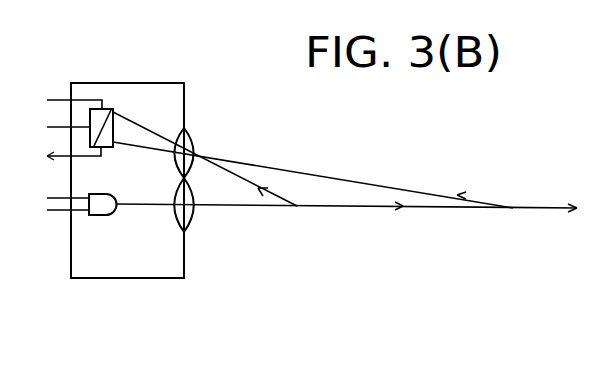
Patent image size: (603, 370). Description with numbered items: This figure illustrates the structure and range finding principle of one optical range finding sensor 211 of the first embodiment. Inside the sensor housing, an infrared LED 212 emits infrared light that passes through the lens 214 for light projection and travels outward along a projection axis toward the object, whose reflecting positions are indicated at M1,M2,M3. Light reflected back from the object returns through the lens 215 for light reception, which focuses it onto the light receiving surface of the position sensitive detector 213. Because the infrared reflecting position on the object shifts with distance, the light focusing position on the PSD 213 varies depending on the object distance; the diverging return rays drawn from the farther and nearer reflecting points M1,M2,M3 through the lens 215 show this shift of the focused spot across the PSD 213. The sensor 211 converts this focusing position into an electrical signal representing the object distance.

The optical range finding sensor 211 is at (112, 278).
The infrared LED 212 is at (117, 217).
The position sensitive detector (PSD) 213 is at (108, 109).
The lens for light projection 214 is at (192, 220).
The lens for light reception 215 is at (193, 143).
The reflecting mirrors / measurement points M1,M2,M3 is at (438, 208).